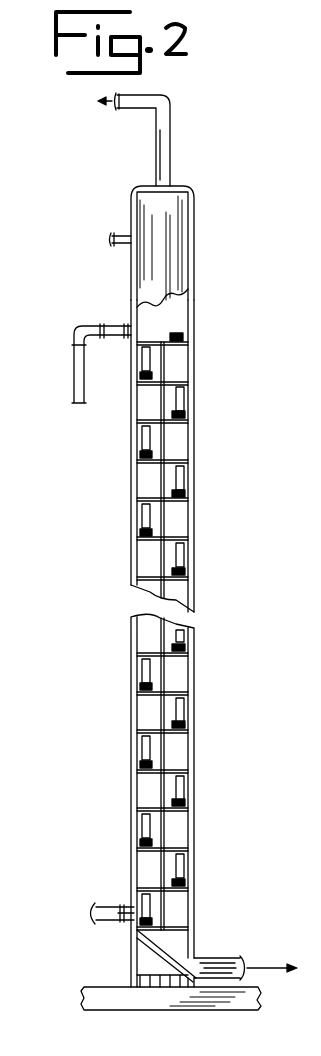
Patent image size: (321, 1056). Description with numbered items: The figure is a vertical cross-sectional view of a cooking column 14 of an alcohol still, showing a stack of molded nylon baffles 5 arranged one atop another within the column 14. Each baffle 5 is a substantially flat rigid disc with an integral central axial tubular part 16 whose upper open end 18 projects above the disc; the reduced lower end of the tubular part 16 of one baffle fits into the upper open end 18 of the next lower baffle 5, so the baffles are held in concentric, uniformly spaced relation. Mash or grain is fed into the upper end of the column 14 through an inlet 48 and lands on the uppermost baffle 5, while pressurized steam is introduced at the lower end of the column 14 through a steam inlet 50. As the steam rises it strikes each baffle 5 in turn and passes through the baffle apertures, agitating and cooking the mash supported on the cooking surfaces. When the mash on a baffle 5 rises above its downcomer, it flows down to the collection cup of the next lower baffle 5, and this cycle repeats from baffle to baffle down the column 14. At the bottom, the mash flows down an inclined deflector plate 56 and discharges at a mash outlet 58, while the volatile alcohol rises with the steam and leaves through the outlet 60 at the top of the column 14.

The baffle 5 is at (181, 643).
The column 14 is at (244, 204).
The central axial tubular part 16 is at (170, 361).
The upper open end 18 is at (159, 391).
The inlet 48 is at (121, 345).
The steam inlet 50 is at (124, 926).
The inclined deflector plate 56 is at (162, 968).
The mash outlet 58 is at (244, 963).
The outlet 60 is at (171, 144).